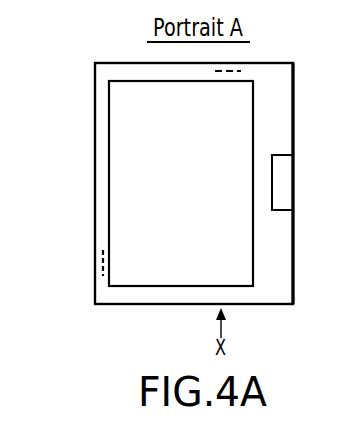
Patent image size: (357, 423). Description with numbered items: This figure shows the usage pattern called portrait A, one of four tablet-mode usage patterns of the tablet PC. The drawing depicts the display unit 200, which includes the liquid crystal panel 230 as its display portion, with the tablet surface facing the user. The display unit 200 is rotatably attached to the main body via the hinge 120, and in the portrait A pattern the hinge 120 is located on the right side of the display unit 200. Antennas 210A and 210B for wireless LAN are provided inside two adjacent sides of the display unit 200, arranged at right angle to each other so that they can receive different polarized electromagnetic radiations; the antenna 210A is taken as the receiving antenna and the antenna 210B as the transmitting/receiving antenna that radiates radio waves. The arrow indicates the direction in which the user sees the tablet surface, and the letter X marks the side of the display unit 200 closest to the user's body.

The display unit 200 is at (86, 127).
The liquid crystal panel 230 is at (246, 244).
The hinge 120 is at (282, 178).
The antenna 210A is at (98, 262).
The antenna 210B is at (232, 73).